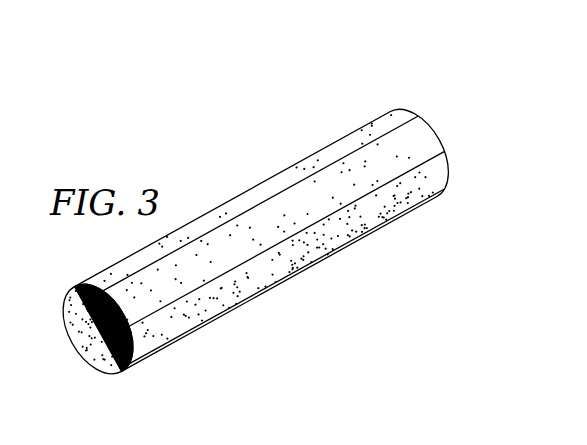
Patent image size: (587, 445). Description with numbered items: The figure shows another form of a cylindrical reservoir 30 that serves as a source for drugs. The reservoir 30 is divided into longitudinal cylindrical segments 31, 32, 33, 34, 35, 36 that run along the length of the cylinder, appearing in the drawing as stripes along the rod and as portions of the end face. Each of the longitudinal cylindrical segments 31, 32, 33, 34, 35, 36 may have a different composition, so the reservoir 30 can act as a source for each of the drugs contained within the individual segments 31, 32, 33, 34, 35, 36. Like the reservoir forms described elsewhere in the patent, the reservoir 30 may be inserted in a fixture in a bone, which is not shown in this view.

The reservoir 30 is at (350, 305).
The longitudinal cylindrical segment 31 is at (67, 325).
The longitudinal cylindrical segment 32 is at (397, 114).
The longitudinal cylindrical segment 33 is at (433, 137).
The longitudinal cylindrical segment 34 is at (441, 173).
The longitudinal cylindrical segment 35 is at (111, 373).
The longitudinal cylindrical segment 36 is at (85, 358).